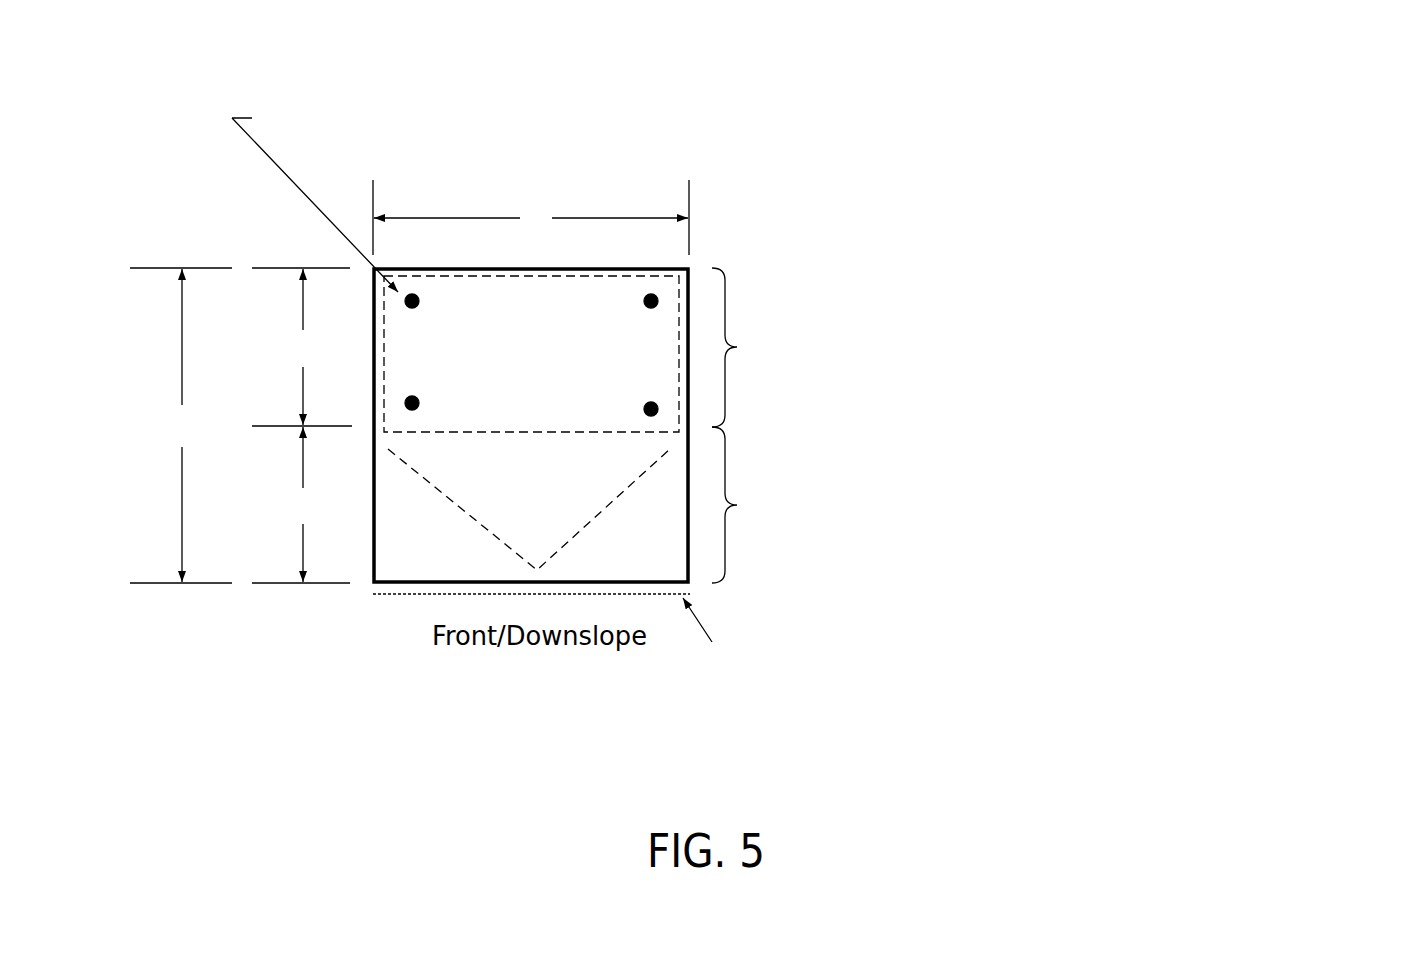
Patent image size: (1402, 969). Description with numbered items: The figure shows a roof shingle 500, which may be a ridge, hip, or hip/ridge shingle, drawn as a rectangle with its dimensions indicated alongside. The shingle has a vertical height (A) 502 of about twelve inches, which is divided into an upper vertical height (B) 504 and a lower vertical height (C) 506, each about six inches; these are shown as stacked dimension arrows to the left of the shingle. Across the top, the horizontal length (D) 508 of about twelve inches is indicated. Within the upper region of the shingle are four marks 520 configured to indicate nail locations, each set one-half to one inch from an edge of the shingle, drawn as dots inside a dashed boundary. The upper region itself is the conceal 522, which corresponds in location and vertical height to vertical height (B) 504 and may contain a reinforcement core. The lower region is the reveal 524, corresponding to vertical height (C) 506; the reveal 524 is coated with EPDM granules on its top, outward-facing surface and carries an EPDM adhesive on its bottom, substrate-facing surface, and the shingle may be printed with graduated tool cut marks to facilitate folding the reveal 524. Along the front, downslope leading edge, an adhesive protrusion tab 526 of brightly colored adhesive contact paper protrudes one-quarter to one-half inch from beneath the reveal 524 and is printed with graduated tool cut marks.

The roof shingle 500 is at (214, 62).
The vertical height (A) 502 is at (165, 427).
The vertical height (B) 504 is at (288, 346).
The vertical height (C) 506 is at (290, 508).
The horizontal length (D) 508 is at (534, 204).
The marks 520 is at (895, 122).
The conceal 522 is at (862, 348).
The reveal 524 is at (1302, 518).
The adhesive protrusion tab 526 is at (1210, 703).